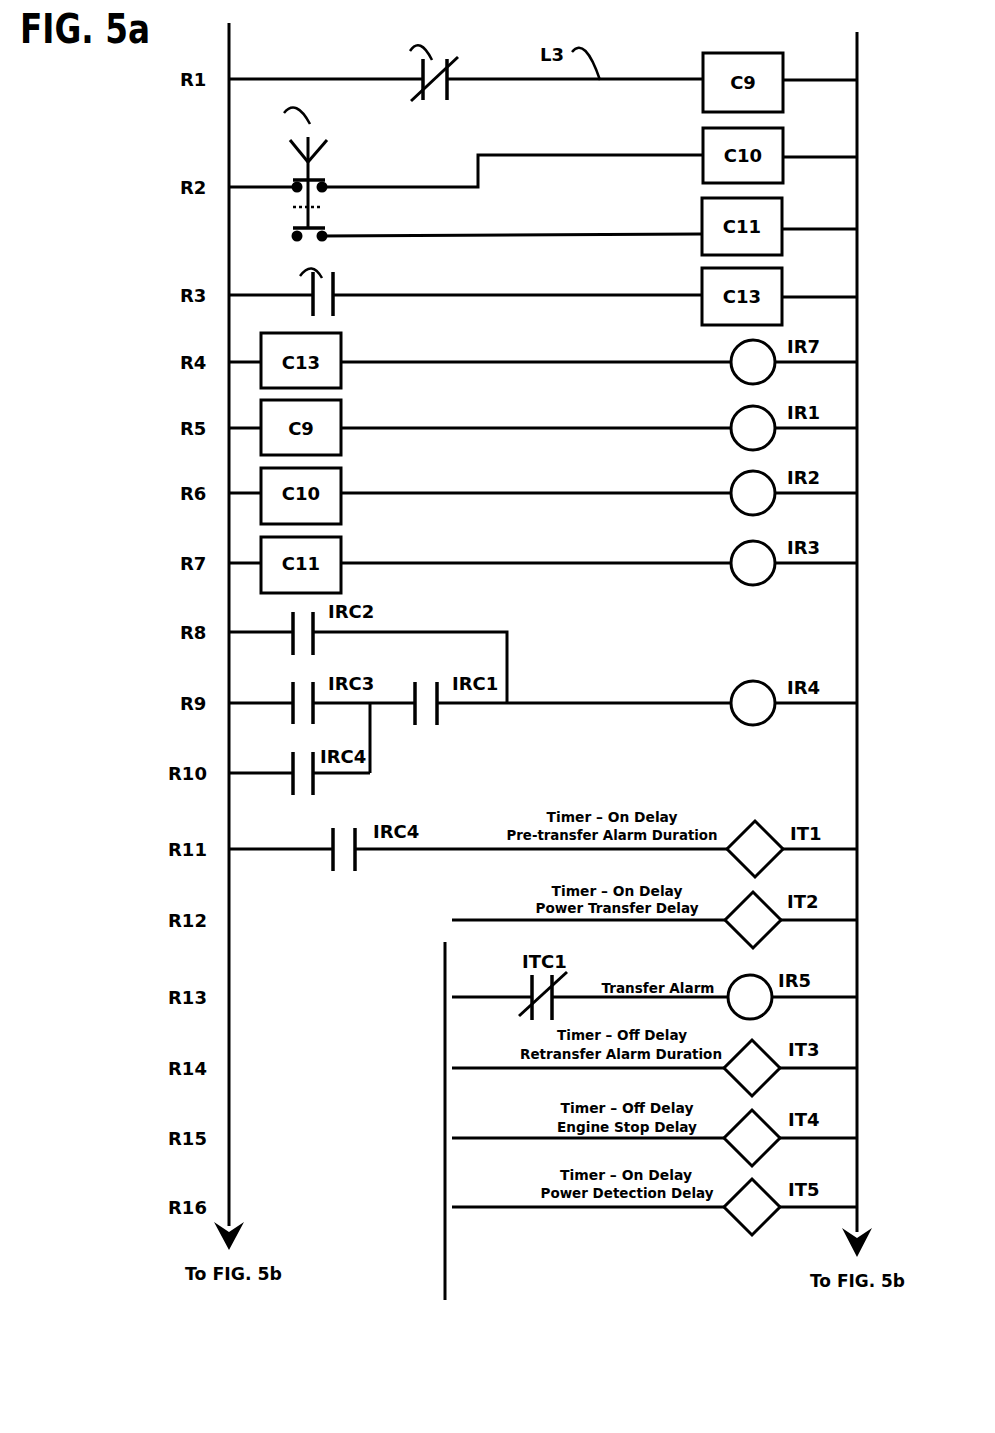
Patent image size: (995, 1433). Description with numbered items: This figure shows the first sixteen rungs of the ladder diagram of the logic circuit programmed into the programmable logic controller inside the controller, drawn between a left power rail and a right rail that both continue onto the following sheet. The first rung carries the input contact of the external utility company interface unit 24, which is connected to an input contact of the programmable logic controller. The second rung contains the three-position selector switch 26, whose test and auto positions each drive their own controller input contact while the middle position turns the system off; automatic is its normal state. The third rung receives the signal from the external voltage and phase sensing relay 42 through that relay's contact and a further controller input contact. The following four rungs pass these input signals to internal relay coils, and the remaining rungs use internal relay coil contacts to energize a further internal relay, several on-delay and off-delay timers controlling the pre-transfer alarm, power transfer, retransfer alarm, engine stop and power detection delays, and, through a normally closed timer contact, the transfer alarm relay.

The utility company interface unit 24 is at (368, 60).
The selector switch 26 is at (293, 186).
The voltage and phase sensing relay 42 is at (398, 283).